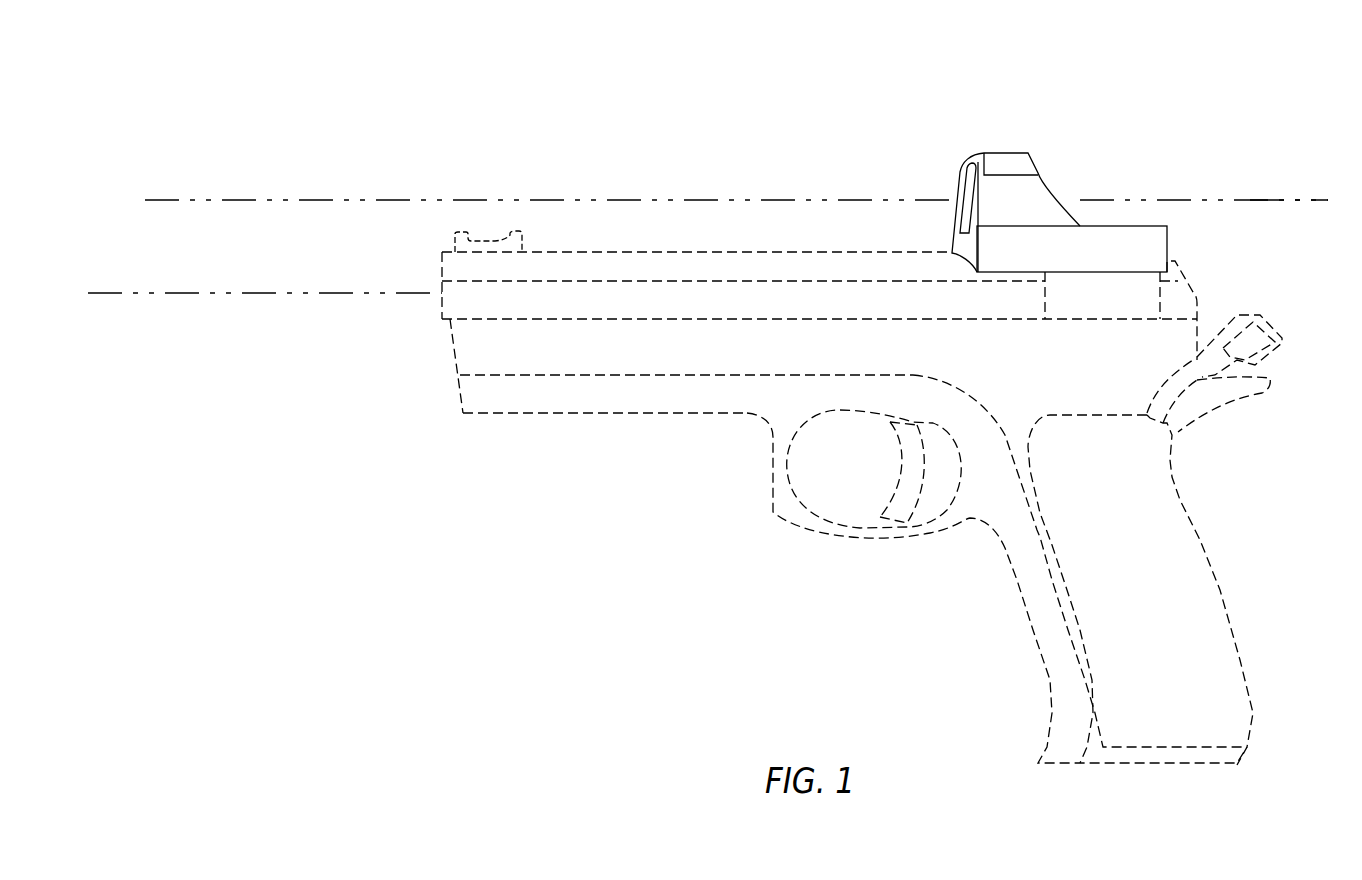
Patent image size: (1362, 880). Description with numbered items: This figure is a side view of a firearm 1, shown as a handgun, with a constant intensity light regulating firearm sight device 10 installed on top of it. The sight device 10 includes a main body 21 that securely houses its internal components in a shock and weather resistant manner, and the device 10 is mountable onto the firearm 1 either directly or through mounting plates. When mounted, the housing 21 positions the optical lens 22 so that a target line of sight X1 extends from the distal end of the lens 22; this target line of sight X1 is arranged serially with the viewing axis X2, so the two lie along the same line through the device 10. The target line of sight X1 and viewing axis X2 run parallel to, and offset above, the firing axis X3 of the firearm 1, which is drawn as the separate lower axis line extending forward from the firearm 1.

The firearm sight device 10 is at (374, 91).
The firearm 1 is at (1212, 476).
The main body 21 is at (1007, 160).
The optical lens 22 is at (973, 183).
The target line of sight X1 is at (235, 200).
The viewing axis X2 is at (1317, 200).
The firing axis X3 is at (188, 293).